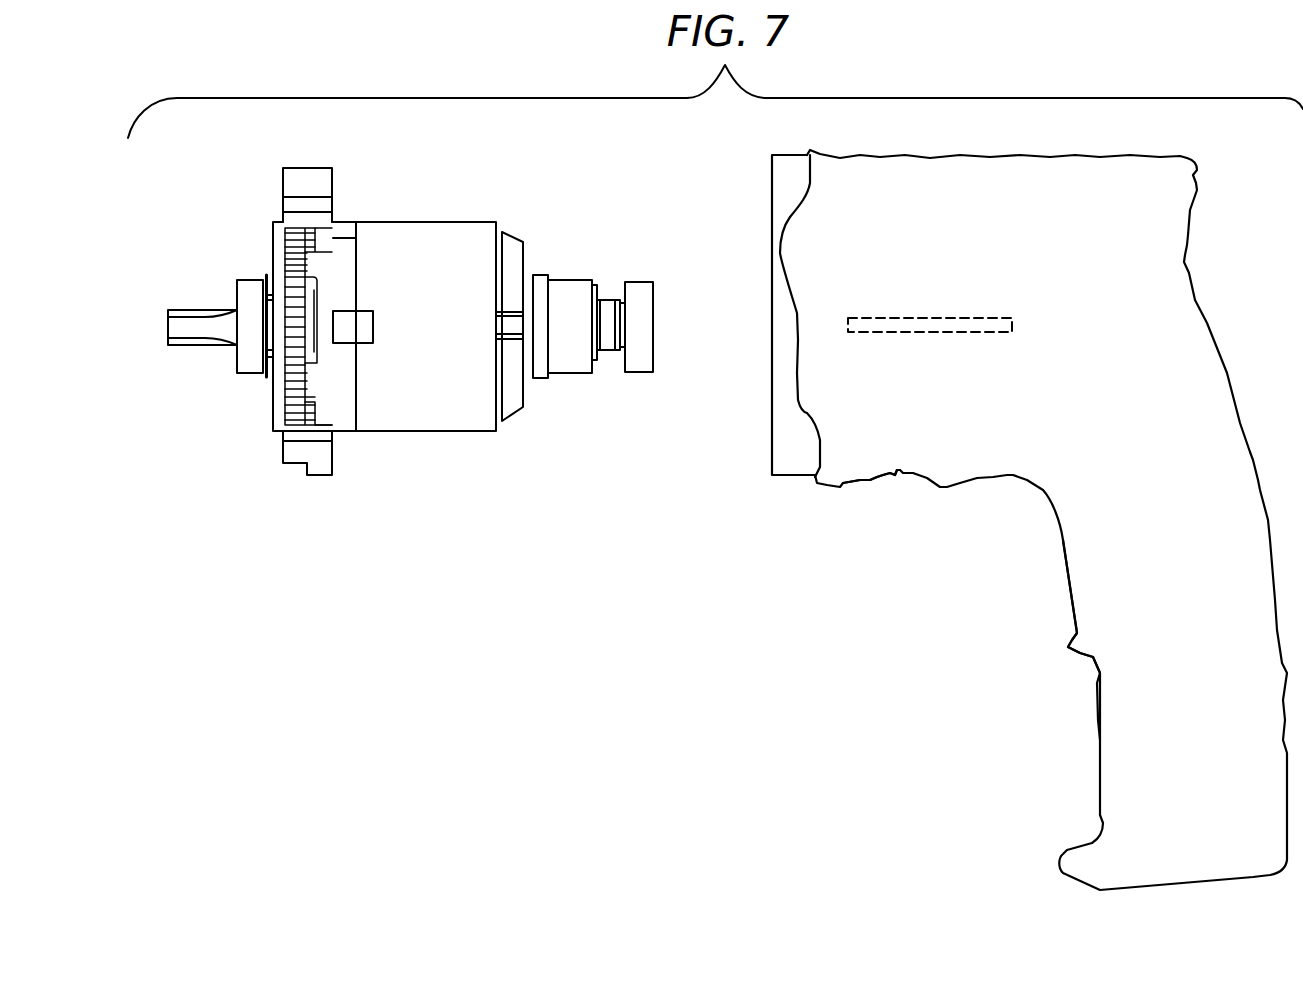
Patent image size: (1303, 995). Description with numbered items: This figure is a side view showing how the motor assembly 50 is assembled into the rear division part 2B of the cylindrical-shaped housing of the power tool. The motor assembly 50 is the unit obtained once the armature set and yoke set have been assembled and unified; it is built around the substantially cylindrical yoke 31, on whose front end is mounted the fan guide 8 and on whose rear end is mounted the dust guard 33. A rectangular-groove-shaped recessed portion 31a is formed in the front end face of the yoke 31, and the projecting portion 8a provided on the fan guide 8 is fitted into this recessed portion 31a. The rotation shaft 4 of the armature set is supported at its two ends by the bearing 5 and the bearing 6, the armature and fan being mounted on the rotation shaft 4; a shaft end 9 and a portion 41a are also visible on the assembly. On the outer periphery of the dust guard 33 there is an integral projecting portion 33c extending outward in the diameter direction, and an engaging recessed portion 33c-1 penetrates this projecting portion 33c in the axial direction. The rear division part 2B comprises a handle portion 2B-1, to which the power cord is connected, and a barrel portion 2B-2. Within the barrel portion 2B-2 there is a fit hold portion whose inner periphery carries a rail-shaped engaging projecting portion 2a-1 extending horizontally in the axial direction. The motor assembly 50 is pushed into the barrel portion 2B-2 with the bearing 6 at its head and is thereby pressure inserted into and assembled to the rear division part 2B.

The rear division part 2B is at (1187, 240).
The handle portion 2B-1 is at (1097, 647).
The barrel portion 2B-2 is at (881, 466).
The engaging projecting portion 2a-1 is at (960, 317).
The rotation shaft 4 is at (615, 350).
The bearing 5 is at (249, 372).
The bearing 6 is at (640, 357).
The fan guide 8 is at (324, 172).
The projecting portion 8a is at (362, 320).
The output shaft 9 is at (190, 345).
The yoke 31 is at (473, 230).
The recessed portion 31a is at (363, 343).
The dust guard 33 is at (513, 408).
The projecting portion 33c is at (518, 278).
The engaging recessed portion 33c-1 is at (510, 323).
The fan 41a is at (573, 287).
The motor assembly 50 is at (476, 185).